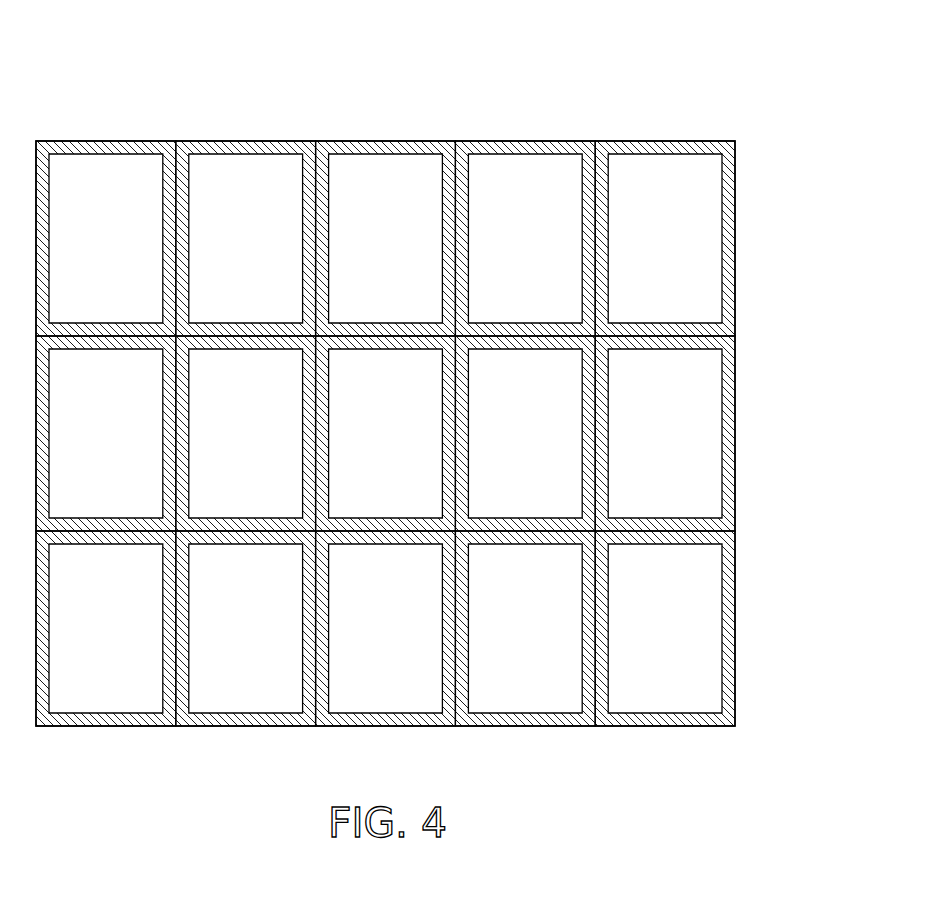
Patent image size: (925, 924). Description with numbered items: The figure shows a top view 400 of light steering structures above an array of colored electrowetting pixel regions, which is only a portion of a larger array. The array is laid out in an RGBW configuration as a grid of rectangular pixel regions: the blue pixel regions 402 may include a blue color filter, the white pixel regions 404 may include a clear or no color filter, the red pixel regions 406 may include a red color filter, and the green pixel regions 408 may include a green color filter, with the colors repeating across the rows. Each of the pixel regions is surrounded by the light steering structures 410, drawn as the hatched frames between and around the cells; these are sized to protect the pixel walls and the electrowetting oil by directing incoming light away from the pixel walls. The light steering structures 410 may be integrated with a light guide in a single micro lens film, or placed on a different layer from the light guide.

The top view 400 is at (418, 371).
The light steering structures 410 is at (385, 418).
The blue pixel regions 402 is at (125, 216).
The white pixel regions 404 is at (265, 216).
The red pixel regions 406 is at (366, 216).
The green pixel regions 408 is at (506, 216).